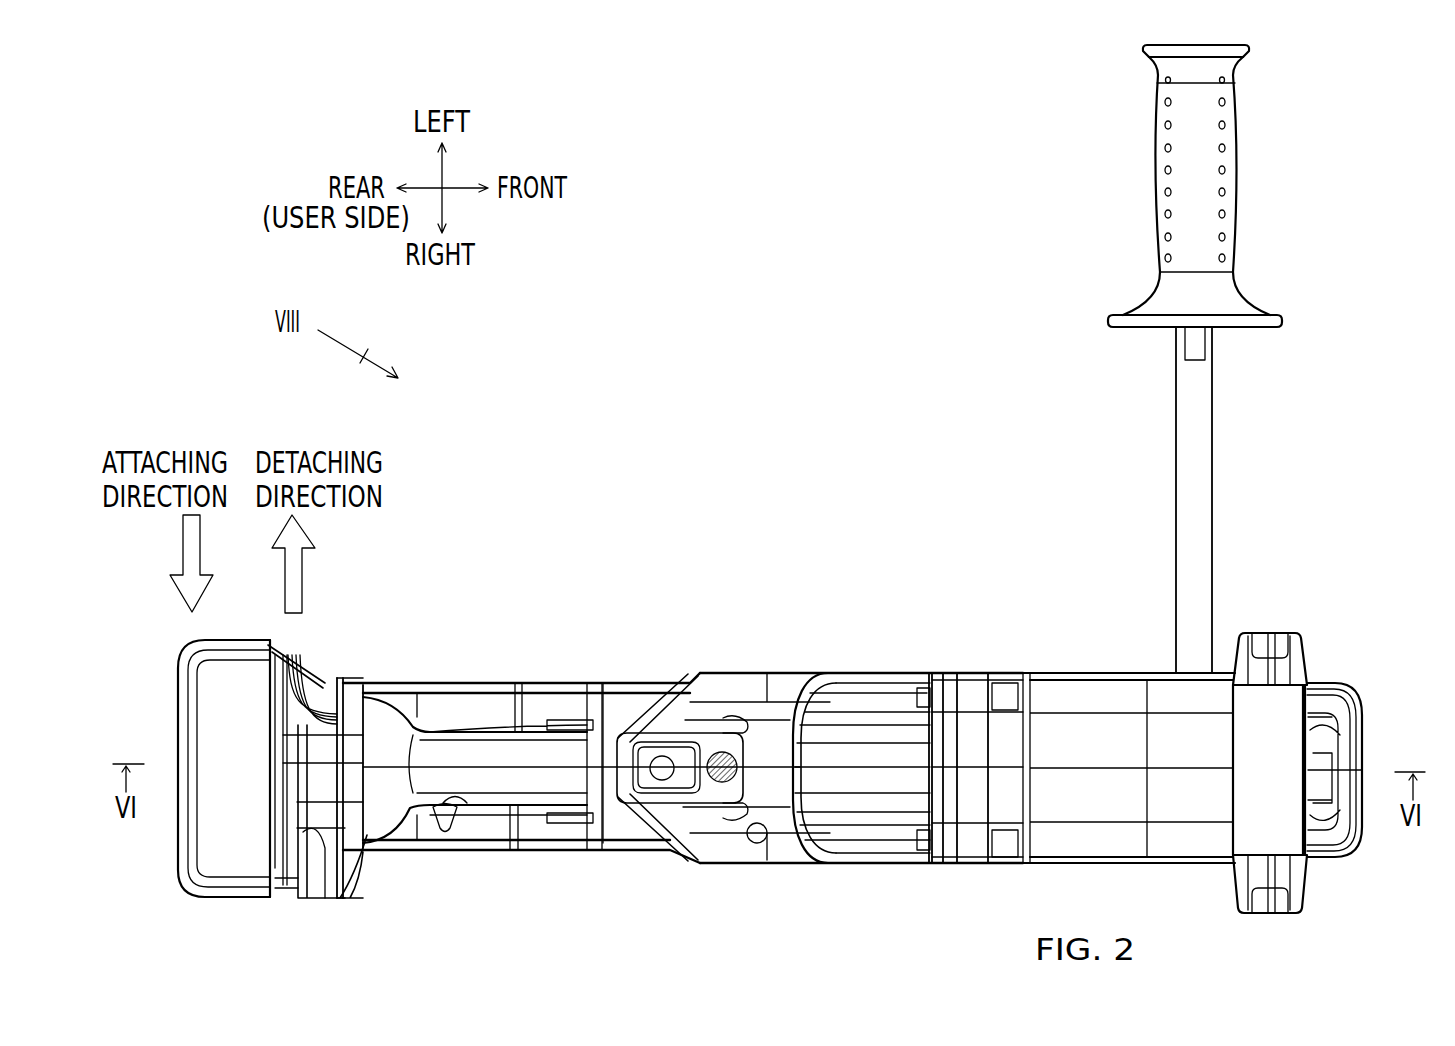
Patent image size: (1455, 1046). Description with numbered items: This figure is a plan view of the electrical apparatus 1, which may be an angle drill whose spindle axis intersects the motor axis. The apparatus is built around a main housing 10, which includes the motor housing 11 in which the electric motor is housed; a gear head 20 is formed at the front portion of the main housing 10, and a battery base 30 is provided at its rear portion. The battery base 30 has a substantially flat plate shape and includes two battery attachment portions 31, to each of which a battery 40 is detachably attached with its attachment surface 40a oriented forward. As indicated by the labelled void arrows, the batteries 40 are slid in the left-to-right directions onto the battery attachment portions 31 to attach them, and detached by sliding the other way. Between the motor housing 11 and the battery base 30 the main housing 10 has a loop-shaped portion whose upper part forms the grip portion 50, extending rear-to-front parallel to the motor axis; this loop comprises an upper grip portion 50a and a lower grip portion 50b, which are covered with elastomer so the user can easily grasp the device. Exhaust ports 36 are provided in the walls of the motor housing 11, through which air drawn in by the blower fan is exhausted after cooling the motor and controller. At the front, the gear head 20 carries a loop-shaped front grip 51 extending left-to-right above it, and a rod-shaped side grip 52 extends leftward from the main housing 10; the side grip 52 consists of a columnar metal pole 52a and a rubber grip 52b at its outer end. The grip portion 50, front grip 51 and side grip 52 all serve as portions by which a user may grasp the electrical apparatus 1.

The electrical apparatus 1 is at (715, 452).
The main housing 10 is at (767, 590).
The motor housing 11 is at (855, 668).
The gear head 20 is at (1363, 691).
The battery base 30 is at (380, 672).
The battery attachment portion 31 is at (323, 682).
The exhaust ports 36 is at (924, 680).
The battery 40 is at (222, 697).
The attachment surface 40a is at (325, 898).
The grip portion 50 is at (502, 680).
The upper grip portion 50a is at (547, 748).
The lower grip portion 50b is at (487, 850).
The front grip 51 is at (1290, 708).
The side grip 52 is at (1256, 442).
The pole 52a is at (1197, 503).
The rubber grip 52b is at (1212, 183).